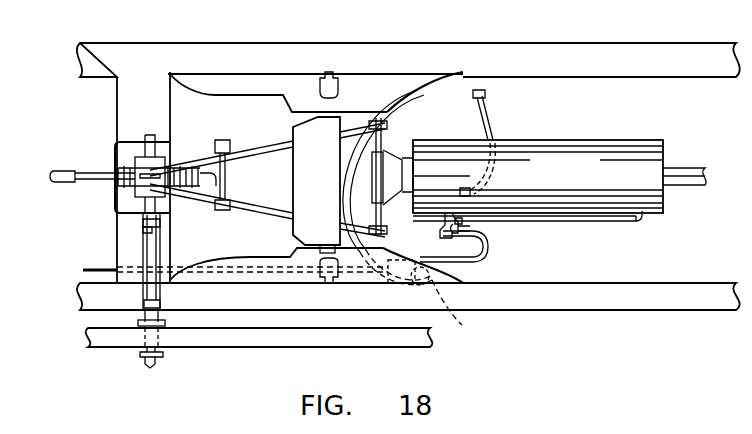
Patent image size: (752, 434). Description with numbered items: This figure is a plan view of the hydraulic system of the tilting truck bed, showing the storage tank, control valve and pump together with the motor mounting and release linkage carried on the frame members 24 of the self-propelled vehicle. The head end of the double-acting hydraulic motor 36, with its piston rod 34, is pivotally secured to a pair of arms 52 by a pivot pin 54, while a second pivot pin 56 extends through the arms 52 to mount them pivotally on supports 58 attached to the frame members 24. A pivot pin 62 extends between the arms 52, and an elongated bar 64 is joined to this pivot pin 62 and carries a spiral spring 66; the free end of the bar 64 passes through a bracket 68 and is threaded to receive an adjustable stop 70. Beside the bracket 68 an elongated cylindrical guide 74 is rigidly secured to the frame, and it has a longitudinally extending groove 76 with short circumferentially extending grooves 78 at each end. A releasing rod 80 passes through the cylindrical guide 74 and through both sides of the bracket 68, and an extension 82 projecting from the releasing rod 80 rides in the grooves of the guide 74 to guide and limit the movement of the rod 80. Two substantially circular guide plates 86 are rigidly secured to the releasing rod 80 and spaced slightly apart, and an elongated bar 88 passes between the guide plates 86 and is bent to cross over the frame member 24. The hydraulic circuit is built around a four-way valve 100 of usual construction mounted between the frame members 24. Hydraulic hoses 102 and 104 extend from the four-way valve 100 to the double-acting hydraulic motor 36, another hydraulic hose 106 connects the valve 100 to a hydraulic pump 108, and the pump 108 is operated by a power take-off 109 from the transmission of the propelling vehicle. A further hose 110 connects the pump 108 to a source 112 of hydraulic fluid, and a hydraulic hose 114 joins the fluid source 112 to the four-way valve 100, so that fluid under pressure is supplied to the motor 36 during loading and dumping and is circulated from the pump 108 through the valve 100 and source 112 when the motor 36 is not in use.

The frame members 24 is at (652, 56).
The piston rod 34 is at (686, 174).
The double-acting hydraulic motor 36 is at (638, 152).
The arms 52 is at (276, 150).
The pivot pin 54 is at (386, 150).
The pivot pin 56 is at (331, 72).
The supports 58 is at (288, 88).
The pivot pin 62 is at (222, 152).
The elongated bar 64 is at (112, 176).
The spiral spring 66 is at (190, 166).
The bracket 68 is at (114, 160).
The adjustable stop 70 is at (66, 172).
The cylindrical guide 74 is at (158, 300).
The longitudinally extending groove 76 is at (158, 250).
The circumferentially extending grooves 78 is at (160, 222).
The releasing rod 80 is at (165, 323).
The extension 82 is at (143, 231).
The guide plates 86 is at (140, 352).
The elongated bar 88 is at (372, 343).
The four-way valve 100 is at (474, 230).
The hydraulic hose 102 is at (590, 224).
The hydraulic hose 104 is at (440, 234).
The hydraulic hose 106 is at (476, 261).
The hydraulic pump 108 is at (446, 299).
The power take-off 109 is at (106, 270).
The hose 110 is at (393, 95).
The source of hydraulic fluid 112 is at (484, 94).
The hydraulic hose 114 is at (484, 122).